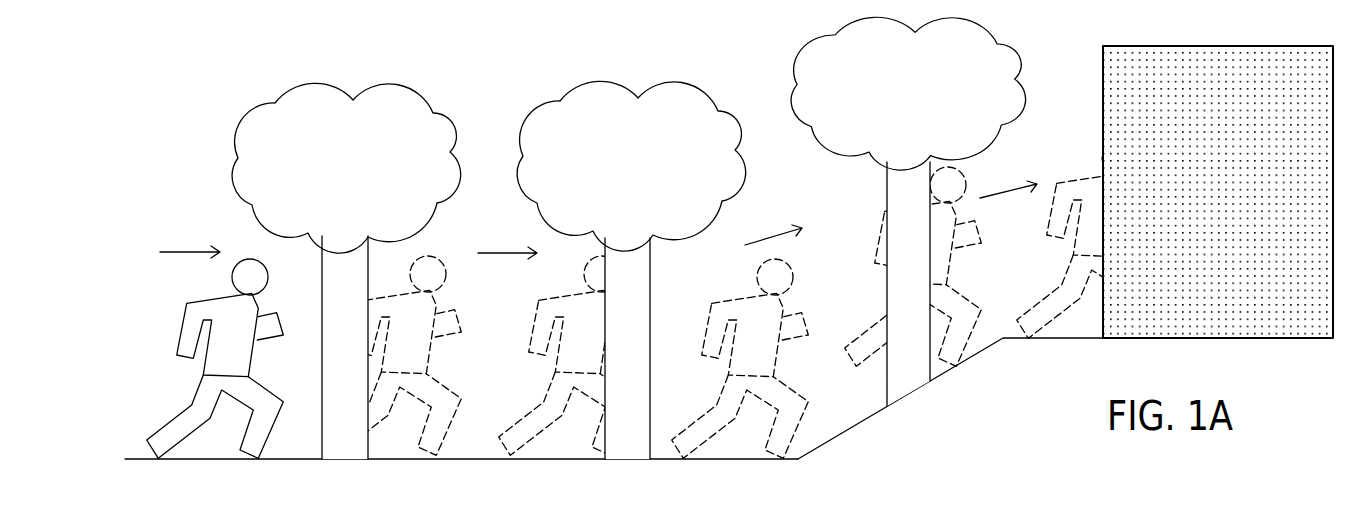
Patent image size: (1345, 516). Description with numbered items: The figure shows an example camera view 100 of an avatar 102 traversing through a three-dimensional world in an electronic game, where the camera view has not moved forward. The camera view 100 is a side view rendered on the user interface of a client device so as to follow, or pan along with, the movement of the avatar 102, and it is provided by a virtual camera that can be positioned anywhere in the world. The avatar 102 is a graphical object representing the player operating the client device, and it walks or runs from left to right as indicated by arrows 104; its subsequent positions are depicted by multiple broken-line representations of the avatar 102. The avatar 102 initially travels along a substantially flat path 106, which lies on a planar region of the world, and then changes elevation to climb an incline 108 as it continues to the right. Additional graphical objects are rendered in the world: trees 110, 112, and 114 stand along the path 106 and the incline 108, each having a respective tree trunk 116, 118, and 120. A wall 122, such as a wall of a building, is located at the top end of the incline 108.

The camera view 100 is at (250, 52).
The avatar 102 is at (235, 357).
The arrows 104 is at (522, 252).
The flat path 106 is at (408, 460).
The incline 108 is at (880, 412).
The tree 110 is at (243, 185).
The tree 112 is at (532, 185).
The tree 114 is at (807, 80).
The tree trunk 116 is at (337, 327).
The tree trunk 118 is at (638, 320).
The tree trunk 120 is at (892, 312).
The wall 122 is at (1110, 93).